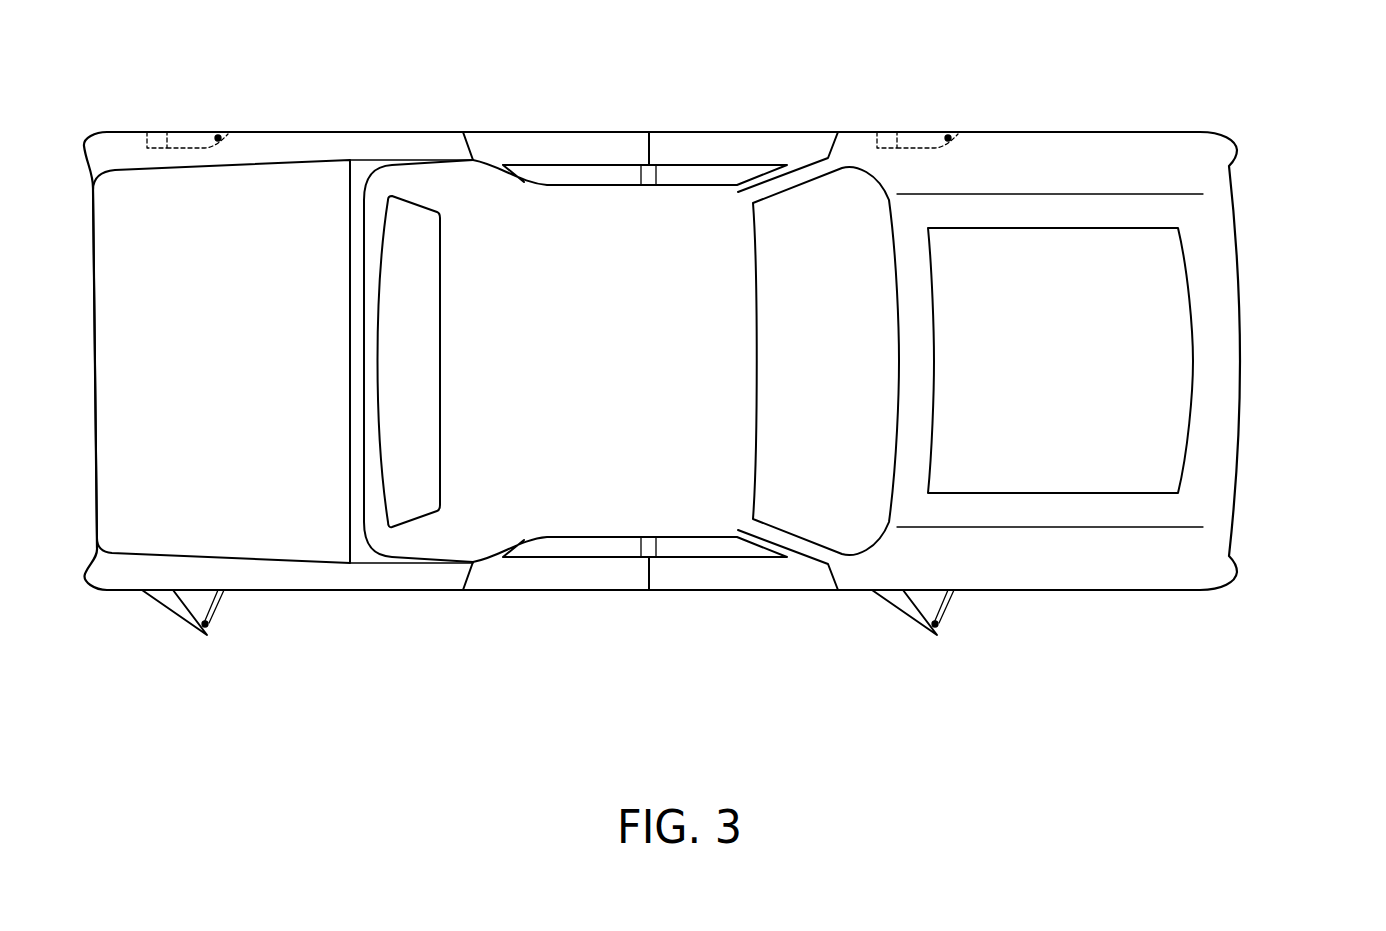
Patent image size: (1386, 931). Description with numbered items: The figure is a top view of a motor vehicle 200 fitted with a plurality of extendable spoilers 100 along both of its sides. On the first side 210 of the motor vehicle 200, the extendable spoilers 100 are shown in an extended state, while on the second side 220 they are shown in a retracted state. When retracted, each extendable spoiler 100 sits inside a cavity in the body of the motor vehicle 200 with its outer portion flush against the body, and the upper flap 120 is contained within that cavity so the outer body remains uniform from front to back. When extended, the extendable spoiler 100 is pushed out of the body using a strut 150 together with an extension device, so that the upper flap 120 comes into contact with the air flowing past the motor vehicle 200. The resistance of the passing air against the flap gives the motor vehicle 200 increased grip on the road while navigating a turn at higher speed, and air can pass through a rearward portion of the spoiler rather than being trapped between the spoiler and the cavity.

The extendable spoiler 100 is at (222, 141).
The upper flap 120 is at (193, 140).
The strut 150 is at (216, 603).
The motor vehicle 200 is at (1218, 362).
The first side of the motor vehicle 210 is at (650, 592).
The second side of the motor vehicle 220 is at (676, 132).